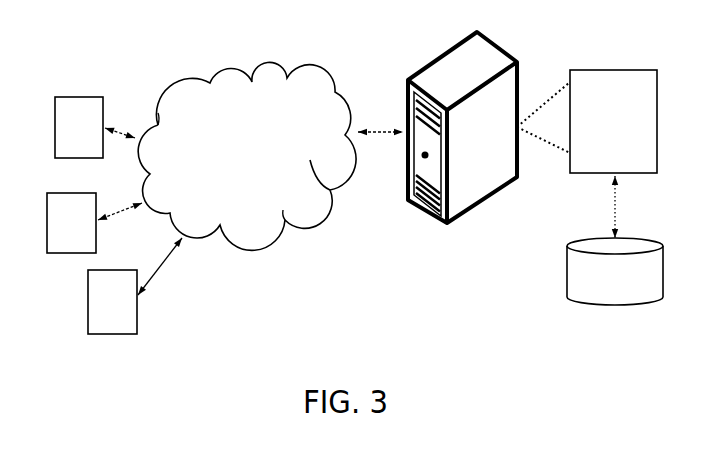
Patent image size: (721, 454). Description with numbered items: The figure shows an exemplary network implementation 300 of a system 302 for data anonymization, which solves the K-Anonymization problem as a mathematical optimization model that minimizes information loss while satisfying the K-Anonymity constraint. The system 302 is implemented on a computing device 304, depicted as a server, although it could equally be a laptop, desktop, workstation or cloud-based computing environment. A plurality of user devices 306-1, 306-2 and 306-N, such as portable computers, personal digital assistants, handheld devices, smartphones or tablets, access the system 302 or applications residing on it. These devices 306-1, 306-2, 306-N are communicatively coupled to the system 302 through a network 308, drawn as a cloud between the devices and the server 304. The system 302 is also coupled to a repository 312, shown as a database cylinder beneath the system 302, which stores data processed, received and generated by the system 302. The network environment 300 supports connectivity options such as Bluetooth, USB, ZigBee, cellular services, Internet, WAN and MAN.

The network implementation 300 is at (340, 267).
The system 302 is at (597, 70).
The computing device 304 is at (512, 60).
The device 306-1 is at (80, 97).
The device 306-2 is at (70, 253).
The device 306-N is at (110, 335).
The network 308 is at (257, 152).
The repository 312 is at (567, 267).